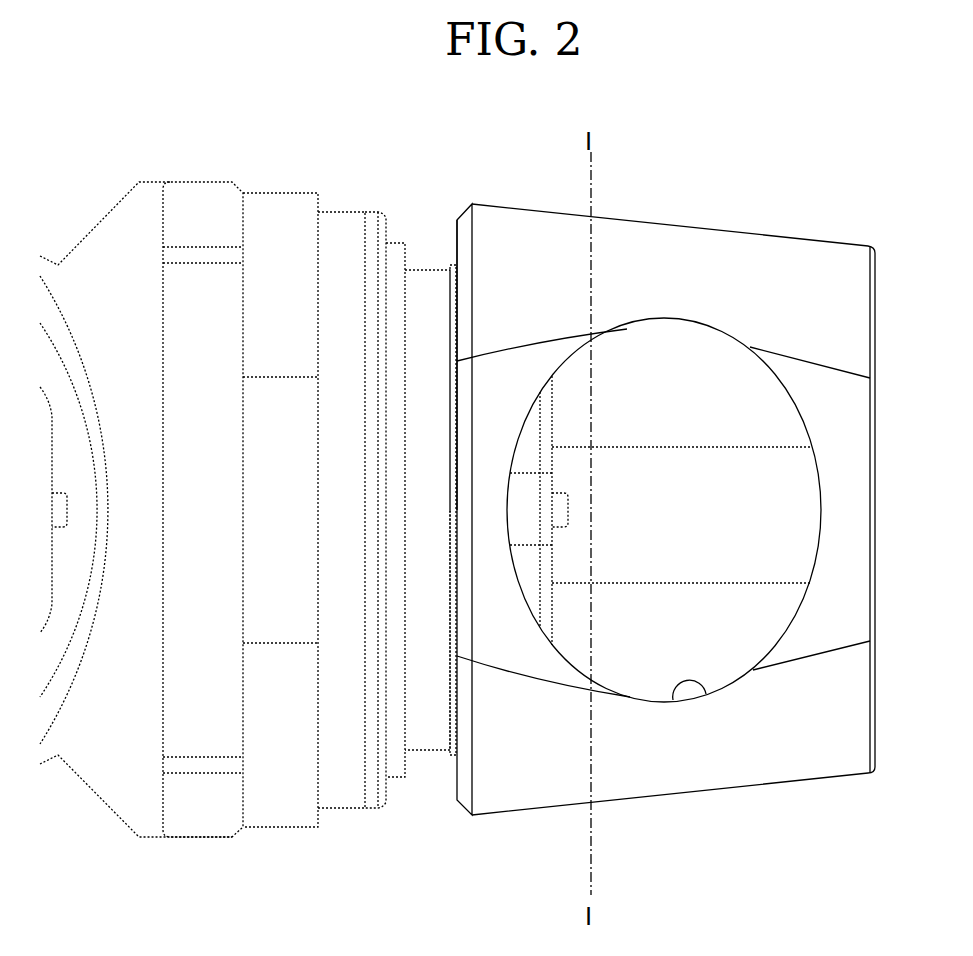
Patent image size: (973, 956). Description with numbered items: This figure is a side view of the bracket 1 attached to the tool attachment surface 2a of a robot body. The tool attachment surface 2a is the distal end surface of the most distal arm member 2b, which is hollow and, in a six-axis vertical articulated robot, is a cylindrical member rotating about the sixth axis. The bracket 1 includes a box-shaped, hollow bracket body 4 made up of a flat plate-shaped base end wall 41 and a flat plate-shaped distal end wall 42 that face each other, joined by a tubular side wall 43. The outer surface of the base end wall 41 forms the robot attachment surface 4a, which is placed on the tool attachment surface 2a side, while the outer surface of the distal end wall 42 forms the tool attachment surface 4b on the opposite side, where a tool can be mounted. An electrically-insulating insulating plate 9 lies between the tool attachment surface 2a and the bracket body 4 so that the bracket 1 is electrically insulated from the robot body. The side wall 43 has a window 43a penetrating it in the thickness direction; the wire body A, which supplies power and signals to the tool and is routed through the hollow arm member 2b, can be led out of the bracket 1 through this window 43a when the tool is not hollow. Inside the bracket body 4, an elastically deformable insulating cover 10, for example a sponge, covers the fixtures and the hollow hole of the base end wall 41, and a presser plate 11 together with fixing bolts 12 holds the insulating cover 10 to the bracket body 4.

The bracket 1 is at (779, 110).
The bracket body 4 is at (804, 218).
The robot attachment surface 4a is at (457, 297).
The tool attachment surface 4b is at (875, 702).
The tool attachment surface 2a is at (450, 338).
The most distal arm member 2b is at (423, 750).
The insulating plate 9 is at (452, 757).
The insulating cover 10 is at (528, 584).
The presser plate 11 is at (549, 618).
The fixing bolts 12 is at (570, 510).
The base end wall 41 is at (457, 513).
The distal end wall 42 is at (875, 306).
The side wall 43 is at (684, 226).
The window 43a is at (707, 697).
The wire body A is at (660, 446).